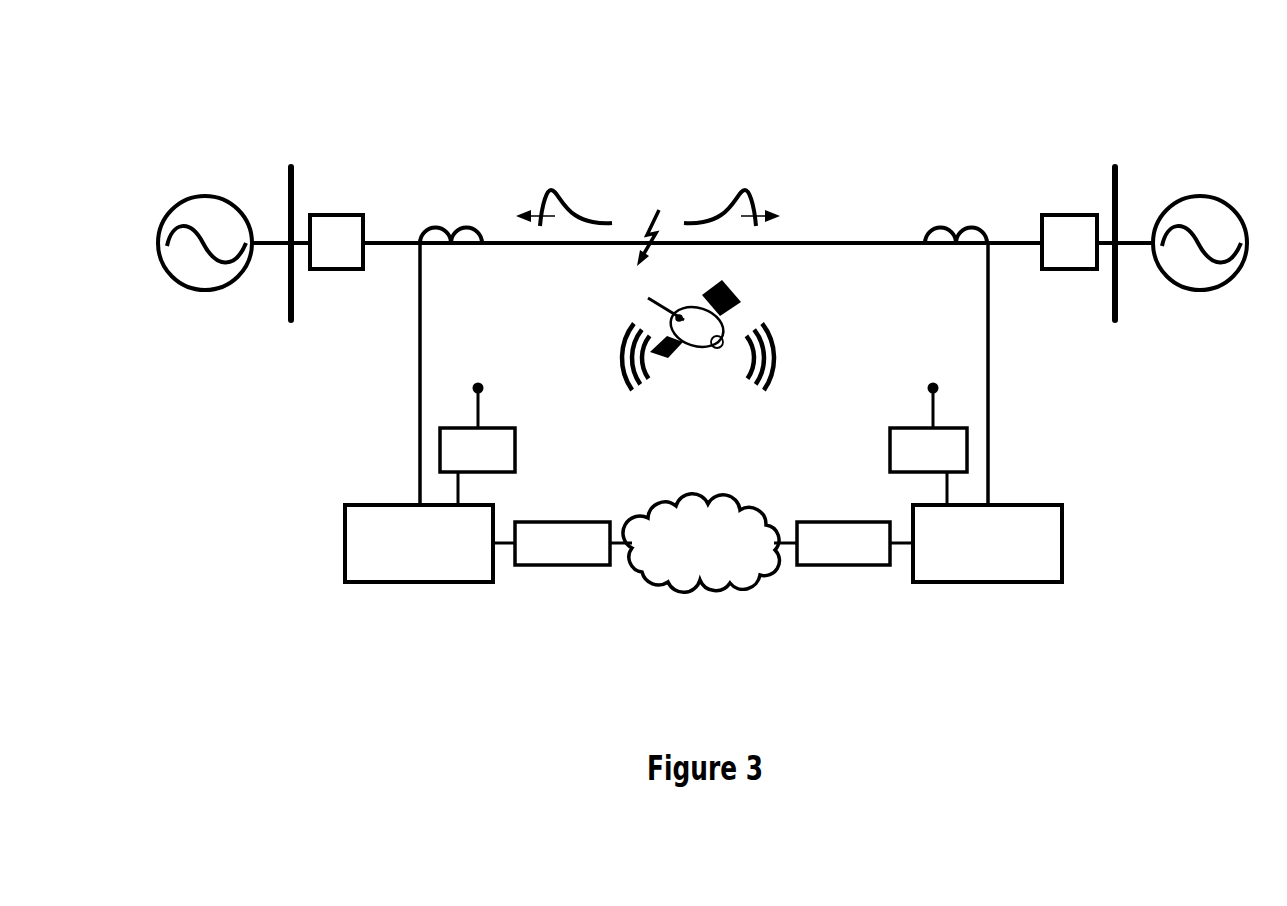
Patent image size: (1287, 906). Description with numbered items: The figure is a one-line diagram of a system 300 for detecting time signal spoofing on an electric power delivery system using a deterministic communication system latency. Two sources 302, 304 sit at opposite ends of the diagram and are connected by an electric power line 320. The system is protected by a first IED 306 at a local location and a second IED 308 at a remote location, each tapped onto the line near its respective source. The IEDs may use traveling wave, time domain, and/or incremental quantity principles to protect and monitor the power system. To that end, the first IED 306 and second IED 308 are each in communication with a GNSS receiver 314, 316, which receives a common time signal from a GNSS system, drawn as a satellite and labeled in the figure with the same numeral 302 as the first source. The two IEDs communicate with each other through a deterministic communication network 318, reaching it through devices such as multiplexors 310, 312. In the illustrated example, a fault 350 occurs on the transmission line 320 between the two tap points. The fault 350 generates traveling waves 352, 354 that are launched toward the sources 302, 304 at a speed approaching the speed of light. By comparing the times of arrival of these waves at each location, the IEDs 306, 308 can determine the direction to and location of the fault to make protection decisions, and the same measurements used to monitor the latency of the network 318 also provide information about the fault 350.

The system 300 is at (1002, 92).
The source 302 is at (204, 196).
The source 304 is at (1198, 196).
The first IED 306 is at (370, 584).
The second IED 308 is at (1010, 584).
The multiplexor 310 is at (565, 567).
The multiplexor 312 is at (825, 567).
The GNSS receiver 314 is at (516, 462).
The GNSS receiver 316 is at (890, 462).
The deterministic communication network 318 is at (695, 585).
The electric power line 320 is at (829, 243).
The fault 350 is at (652, 246).
The traveling wave 352 is at (549, 186).
The traveling wave 354 is at (748, 186).